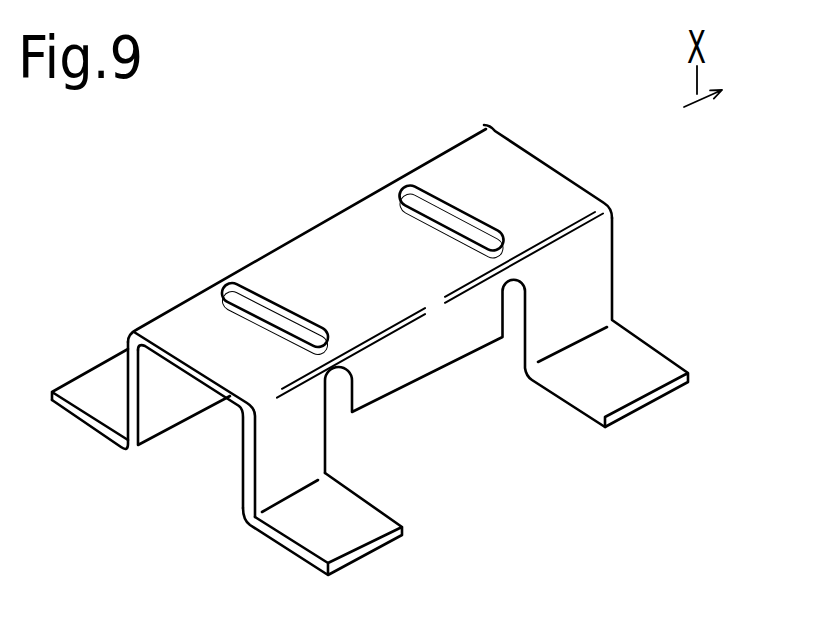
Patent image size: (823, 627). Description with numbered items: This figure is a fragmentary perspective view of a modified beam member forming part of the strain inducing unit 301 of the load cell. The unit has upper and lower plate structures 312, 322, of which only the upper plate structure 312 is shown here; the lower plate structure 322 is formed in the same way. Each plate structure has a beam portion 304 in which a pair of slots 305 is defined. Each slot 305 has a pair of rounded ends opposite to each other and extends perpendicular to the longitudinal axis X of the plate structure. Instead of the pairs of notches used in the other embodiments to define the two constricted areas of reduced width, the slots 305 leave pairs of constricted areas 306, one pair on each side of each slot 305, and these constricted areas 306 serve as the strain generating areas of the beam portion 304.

The strain inducing unit 301 is at (667, 180).
The beam portion 304 is at (322, 243).
The slot 305 is at (477, 212).
The constricted area 306 is at (398, 188).
The upper plate structure 312 is at (370, 189).
The lower plate structure 322 is at (463, 135).